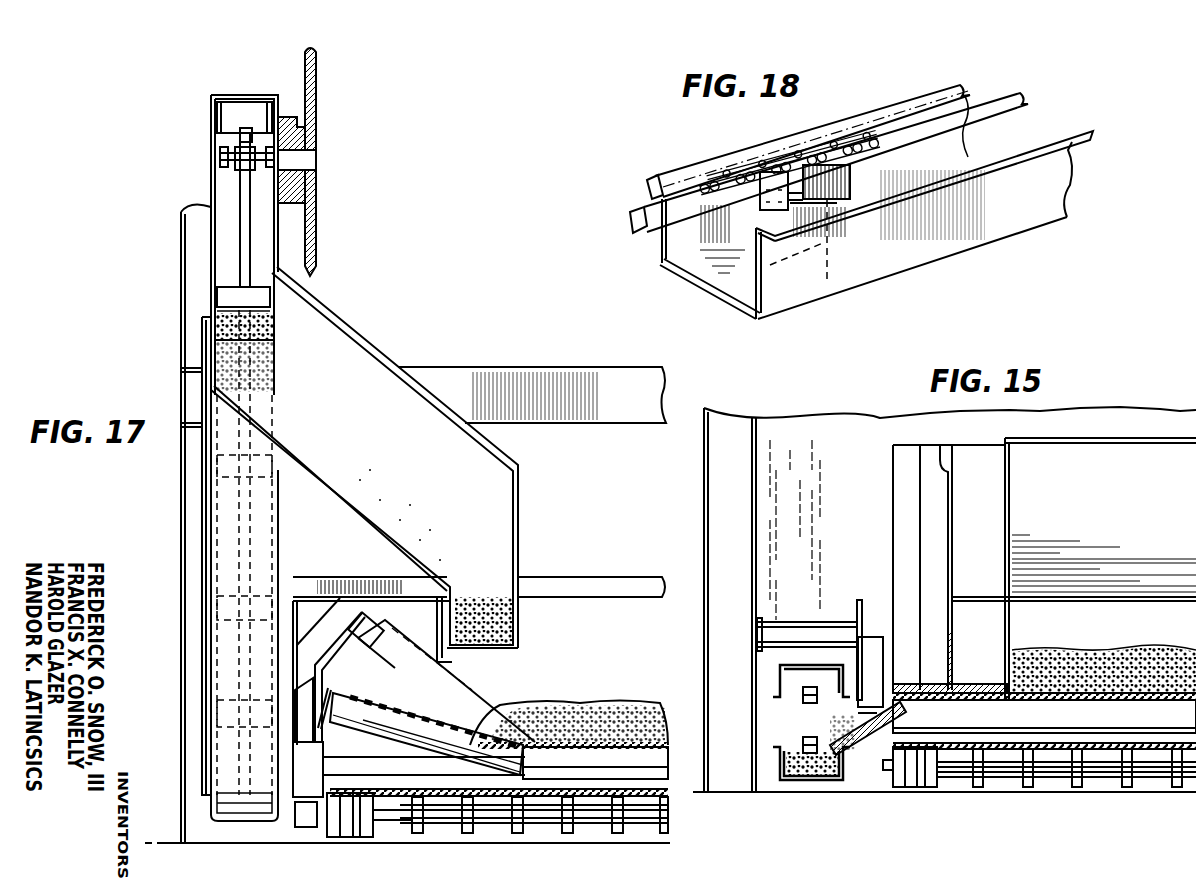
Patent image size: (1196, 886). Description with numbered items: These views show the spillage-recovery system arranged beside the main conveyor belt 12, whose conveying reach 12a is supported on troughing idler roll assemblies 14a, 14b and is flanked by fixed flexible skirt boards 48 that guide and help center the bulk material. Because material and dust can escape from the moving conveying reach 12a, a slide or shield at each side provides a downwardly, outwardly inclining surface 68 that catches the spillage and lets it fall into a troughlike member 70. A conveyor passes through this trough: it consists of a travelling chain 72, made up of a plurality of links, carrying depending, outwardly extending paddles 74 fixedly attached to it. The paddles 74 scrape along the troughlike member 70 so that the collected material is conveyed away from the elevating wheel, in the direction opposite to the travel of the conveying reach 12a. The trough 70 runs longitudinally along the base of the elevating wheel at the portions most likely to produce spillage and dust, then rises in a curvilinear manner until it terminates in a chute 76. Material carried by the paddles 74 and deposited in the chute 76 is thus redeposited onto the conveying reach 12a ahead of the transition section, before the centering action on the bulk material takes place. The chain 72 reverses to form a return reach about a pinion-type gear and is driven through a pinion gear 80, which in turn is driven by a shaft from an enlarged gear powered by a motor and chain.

In FIG. 17, the conveyor belt 12 is at (598, 745).
In FIG. 15, the conveying reach 12a is at (1082, 693).
In FIG. 17, the troughing idler roll assembly 14a is at (480, 743).
In FIG. 17, the troughing idler roll assembly 14b is at (465, 692).
In FIG. 17, the fixed flexible skirt board 48 is at (437, 650).
In FIG. 15, the downwardly, outwardly inclining surface 68 is at (867, 747).
In FIG. 18, the troughlike member 70 is at (1045, 185).
In FIG. 15, the troughlike member 70 is at (825, 780).
In FIG. 17, the travelling chain 72 is at (241, 196).
In FIG. 18, the travelling chain 72 is at (840, 152).
In FIG. 15, the travelling chain 72 is at (808, 737).
In FIG. 17, the paddles 74 is at (262, 298).
In FIG. 18, the paddles 74 is at (835, 195).
In FIG. 15, the paddles 74 is at (805, 672).
In FIG. 17, the chute 76 is at (357, 380).
In FIG. 17, the pinion gear 80 is at (245, 145).